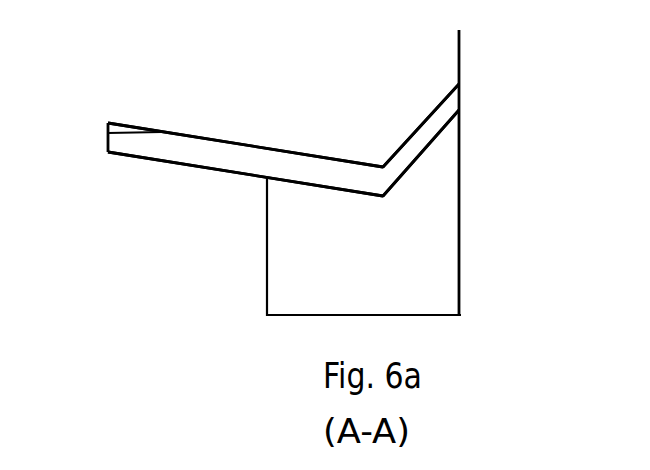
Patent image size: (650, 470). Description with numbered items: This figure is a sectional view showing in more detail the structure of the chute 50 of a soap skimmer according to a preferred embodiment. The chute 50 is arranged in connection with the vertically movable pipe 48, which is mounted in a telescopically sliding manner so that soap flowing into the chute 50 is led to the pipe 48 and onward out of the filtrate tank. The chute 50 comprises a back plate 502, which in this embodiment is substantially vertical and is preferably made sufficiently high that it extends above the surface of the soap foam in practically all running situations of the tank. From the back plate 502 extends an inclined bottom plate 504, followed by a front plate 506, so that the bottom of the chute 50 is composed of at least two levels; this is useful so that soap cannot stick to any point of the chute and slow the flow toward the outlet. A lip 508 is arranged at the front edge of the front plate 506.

The chute 50 is at (490, 110).
The back plate 502 is at (460, 50).
The inclined bottom plate 504 is at (420, 121).
The front plate 506 is at (243, 140).
The lip 508 is at (108, 131).
The vertically movable pipe 48 is at (272, 287).